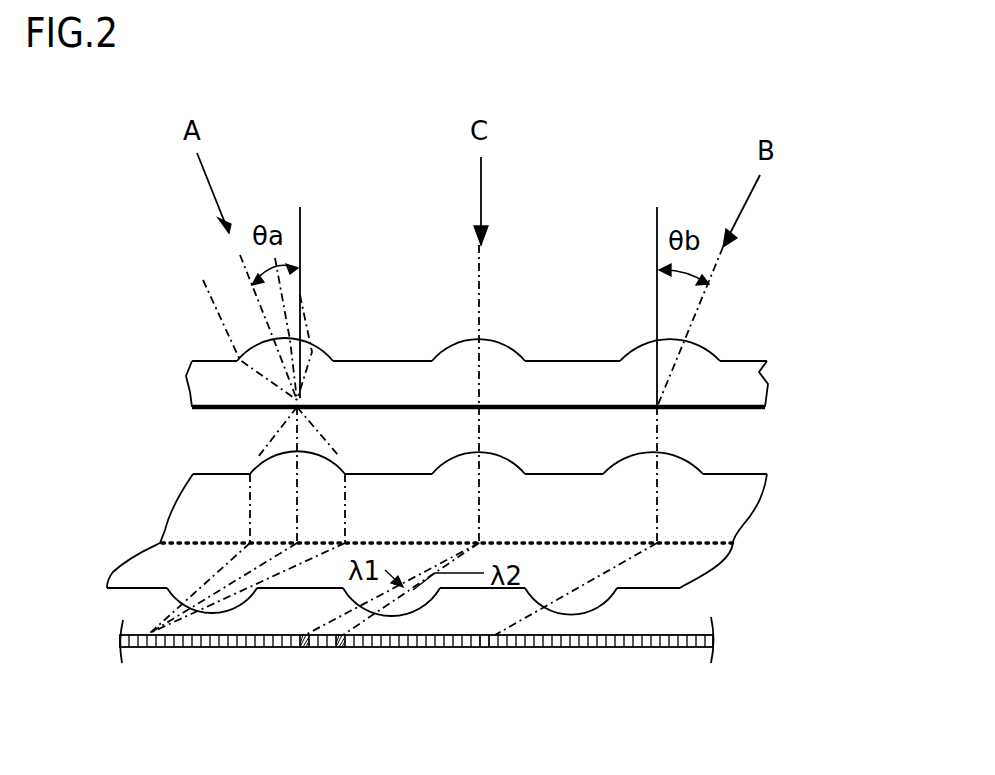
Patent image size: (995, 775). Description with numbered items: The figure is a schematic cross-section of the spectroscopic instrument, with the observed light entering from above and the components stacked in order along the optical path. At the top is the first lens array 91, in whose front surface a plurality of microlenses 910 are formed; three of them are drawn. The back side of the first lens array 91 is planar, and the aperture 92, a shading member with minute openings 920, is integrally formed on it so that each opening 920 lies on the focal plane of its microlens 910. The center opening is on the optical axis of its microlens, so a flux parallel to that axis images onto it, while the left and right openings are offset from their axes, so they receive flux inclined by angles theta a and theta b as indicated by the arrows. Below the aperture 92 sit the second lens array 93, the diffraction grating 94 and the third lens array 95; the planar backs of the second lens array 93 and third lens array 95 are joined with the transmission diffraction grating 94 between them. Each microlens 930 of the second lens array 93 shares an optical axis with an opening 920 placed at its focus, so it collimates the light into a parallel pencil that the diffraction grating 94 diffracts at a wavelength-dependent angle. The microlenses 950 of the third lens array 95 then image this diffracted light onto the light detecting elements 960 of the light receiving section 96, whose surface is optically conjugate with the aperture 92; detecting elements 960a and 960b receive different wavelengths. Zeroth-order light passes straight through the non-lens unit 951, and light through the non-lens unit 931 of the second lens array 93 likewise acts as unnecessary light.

The first lens array 91 is at (750, 378).
The microlens 910 is at (323, 343).
The aperture 92 is at (757, 408).
The opening 920 is at (300, 410).
The second lens array 93 is at (787, 474).
The microlens 930 is at (263, 458).
The non-lens unit 931 is at (210, 473).
The diffraction grating 94 is at (708, 540).
The third lens array 95 is at (787, 553).
The microlens 950 is at (433, 600).
The non-lens unit 951 is at (123, 588).
The light receiving section 96 is at (437, 650).
The light detecting element 960 is at (483, 648).
The photodetector pixel for wavelength λ1 960a is at (302, 648).
The photodetector pixel for wavelength λ2 960b is at (345, 648).